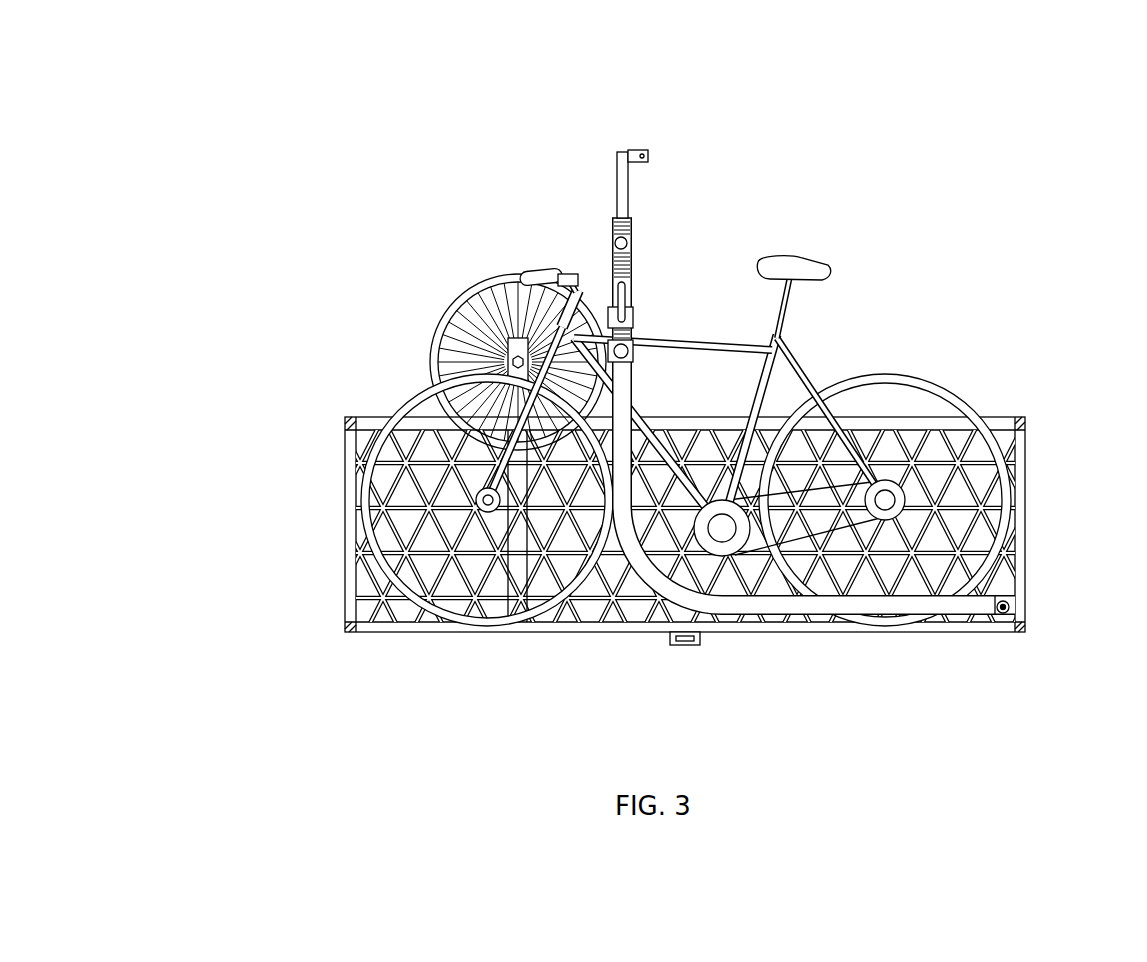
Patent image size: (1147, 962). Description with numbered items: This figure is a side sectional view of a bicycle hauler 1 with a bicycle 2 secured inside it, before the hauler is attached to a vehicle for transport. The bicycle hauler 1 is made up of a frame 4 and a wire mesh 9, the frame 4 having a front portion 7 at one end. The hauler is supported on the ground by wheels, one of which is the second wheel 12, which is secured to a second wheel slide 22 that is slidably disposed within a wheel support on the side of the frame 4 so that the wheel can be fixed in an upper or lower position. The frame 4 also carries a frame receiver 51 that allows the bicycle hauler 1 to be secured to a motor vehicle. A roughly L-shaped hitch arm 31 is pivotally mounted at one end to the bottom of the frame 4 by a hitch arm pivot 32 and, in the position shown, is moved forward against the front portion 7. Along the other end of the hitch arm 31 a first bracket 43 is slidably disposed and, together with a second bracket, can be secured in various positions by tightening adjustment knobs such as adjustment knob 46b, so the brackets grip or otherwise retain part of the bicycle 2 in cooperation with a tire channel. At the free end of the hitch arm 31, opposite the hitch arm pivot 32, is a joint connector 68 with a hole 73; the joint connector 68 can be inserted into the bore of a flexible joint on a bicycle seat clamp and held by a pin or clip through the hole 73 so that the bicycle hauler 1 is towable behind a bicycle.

The bicycle hauler 1 is at (296, 313).
The bicycle 2 is at (686, 441).
The frame 4 is at (693, 425).
The front portion 7 is at (1028, 458).
The wire mesh 9 is at (913, 430).
The second wheel 12 is at (443, 308).
The second wheel slide 22 is at (513, 587).
The hitch arm 31 is at (635, 243).
The hitch arm pivot 32 is at (1005, 612).
The first bracket 43 is at (614, 297).
The adjustment knob 46b is at (632, 348).
The frame receiver 51 is at (690, 648).
The joint connector 68 is at (633, 150).
The hole 73 is at (650, 157).